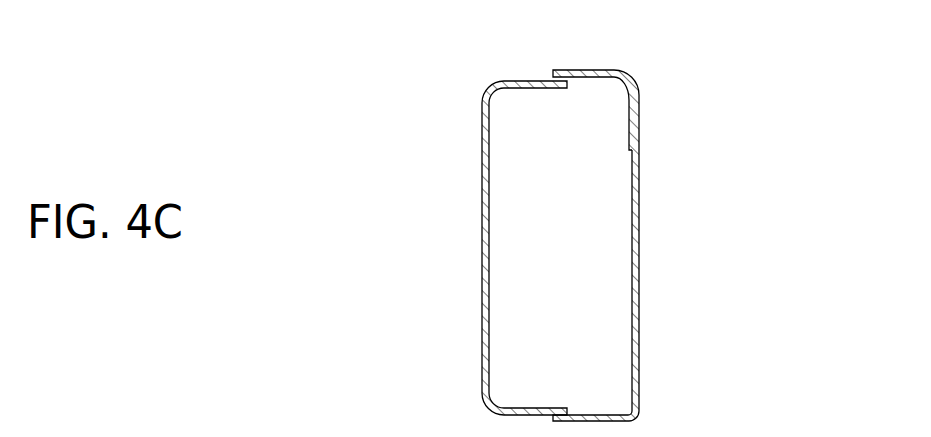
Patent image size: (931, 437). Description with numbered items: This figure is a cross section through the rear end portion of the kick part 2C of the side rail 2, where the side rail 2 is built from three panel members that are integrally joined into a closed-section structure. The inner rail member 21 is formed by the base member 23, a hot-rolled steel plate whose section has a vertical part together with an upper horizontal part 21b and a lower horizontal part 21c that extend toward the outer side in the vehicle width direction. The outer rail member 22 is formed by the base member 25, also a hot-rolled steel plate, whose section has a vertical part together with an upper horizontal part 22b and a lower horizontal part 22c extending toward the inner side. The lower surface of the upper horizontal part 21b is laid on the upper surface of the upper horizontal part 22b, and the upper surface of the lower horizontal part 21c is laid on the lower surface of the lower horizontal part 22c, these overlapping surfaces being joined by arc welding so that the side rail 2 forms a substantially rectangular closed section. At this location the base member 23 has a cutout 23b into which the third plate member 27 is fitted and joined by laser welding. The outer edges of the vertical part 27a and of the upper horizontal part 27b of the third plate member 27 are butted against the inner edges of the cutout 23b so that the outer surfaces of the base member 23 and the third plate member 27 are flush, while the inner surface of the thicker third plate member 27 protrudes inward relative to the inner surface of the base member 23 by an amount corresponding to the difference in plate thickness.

The side rail 2 is at (350, 41).
The kick part 2C is at (507, 59).
The inner rail member 21 is at (664, 216).
The upper horizontal part 21b is at (637, 44).
The lower horizontal part 21c is at (585, 413).
The outer rail member 22 is at (445, 213).
The upper horizontal part 22b is at (526, 80).
The lower horizontal part 22c is at (535, 377).
The base member 23 is at (641, 207).
The cutout 23b is at (627, 139).
The base member 25 is at (524, 213).
The third plate member 27 is at (635, 123).
The vertical part 27a is at (640, 105).
The upper horizontal part 27b is at (602, 70).